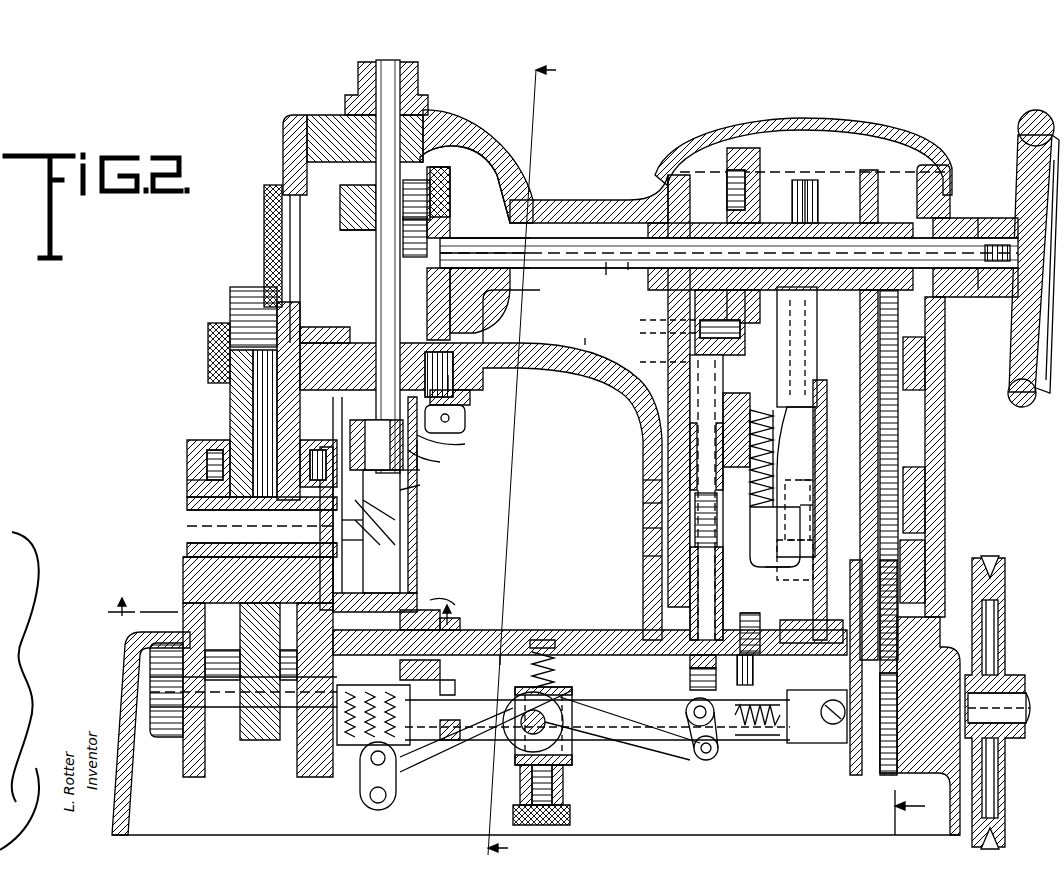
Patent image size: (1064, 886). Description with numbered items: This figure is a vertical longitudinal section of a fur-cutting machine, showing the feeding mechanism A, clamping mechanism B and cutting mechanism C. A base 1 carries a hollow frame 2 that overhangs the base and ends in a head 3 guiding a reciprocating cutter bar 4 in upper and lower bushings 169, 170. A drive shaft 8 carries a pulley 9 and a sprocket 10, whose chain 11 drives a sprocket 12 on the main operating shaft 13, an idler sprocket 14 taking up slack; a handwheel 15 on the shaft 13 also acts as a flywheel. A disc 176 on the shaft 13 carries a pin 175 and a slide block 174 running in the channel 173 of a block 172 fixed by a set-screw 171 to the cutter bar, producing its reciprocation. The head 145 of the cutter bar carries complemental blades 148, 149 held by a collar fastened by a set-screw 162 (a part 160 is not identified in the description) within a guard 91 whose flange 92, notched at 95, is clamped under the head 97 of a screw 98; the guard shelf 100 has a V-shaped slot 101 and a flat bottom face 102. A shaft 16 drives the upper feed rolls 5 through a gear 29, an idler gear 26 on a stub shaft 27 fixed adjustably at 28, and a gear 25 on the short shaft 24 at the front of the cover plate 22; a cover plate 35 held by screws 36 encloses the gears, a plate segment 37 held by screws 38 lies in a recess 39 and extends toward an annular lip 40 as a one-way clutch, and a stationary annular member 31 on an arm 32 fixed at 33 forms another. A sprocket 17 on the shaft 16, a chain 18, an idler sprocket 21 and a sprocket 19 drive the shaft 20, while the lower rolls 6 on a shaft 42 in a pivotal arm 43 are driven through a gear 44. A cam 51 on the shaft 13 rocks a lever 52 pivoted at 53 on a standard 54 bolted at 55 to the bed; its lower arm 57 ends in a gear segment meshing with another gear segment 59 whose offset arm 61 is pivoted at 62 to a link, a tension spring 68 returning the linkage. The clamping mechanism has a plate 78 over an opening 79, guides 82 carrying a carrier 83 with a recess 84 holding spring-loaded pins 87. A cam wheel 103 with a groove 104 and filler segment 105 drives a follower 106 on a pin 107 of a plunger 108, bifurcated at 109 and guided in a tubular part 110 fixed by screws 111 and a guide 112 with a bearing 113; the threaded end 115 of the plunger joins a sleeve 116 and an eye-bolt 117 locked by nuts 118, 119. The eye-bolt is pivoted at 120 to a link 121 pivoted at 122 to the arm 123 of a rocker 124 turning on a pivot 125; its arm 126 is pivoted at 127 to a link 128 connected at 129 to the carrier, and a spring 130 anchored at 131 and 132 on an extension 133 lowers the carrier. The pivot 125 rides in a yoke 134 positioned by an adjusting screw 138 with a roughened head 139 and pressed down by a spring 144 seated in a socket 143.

The base 1 is at (128, 672).
The arm 2 is at (567, 208).
The head 3 is at (338, 116).
The vertical spindle 4 is at (376, 257).
The screw 5 is at (350, 440).
The side plate 6 is at (198, 778).
The pulley shaft 8 is at (1012, 728).
The belt pulley 9 is at (1006, 575).
The bearing post 10 is at (850, 758).
The rod 11 is at (856, 282).
The bar 12 is at (860, 199).
The shaft portion 13 is at (606, 275).
The section line 14 is at (834, 466).
The handwheel / section line 15 is at (1040, 414).
The arm interior 16 is at (585, 340).
The block 17 is at (904, 340).
The ratchet wheel 18 is at (898, 440).
The gear 19 is at (880, 760).
The lower shaft 20 is at (990, 168).
The hub block 21 is at (898, 560).
The head wall 22 is at (284, 137).
The shaft 24 is at (187, 522).
The collar 25 is at (195, 484).
The screw 26 is at (232, 420).
The sleeve 27 is at (230, 397).
The bolt 28 is at (320, 397).
The column 29 is at (230, 392).
The guide 31 is at (640, 320).
The bolt 32 is at (470, 400).
The wall 33 is at (643, 504).
The knob 35 is at (230, 303).
The lever 36 is at (450, 446).
The housing wall 37 is at (187, 502).
The pin 38 is at (813, 485).
The bushing 39 is at (205, 460).
The gear housing 40 is at (195, 456).
The hub 42 is at (183, 678).
The gear 43 is at (258, 745).
The bearing 44 is at (283, 745).
The post 51 is at (793, 196).
The pin 52 is at (810, 185).
The tube 53 is at (790, 340).
The block 54 is at (812, 570).
The bed block 55 is at (812, 618).
The body 57 is at (810, 440).
The pin 59 is at (813, 506).
The foot 61 is at (765, 556).
The spring seat 62 is at (752, 420).
The spring 68 is at (753, 510).
The cover 78 is at (447, 632).
The stud 79 is at (502, 655).
The lever 82 is at (458, 604).
The plate 83 is at (452, 690).
The plate 84 is at (452, 732).
The springs 87 is at (373, 703).
The screw 91 is at (420, 476).
The bolt 92 is at (468, 398).
The wall 95 is at (484, 331).
The bracket 97 is at (467, 418).
The arm wall 98 is at (487, 357).
The bracket 100 is at (400, 570).
The plate 101 is at (400, 545).
The housing 102 is at (420, 598).
The post 103 is at (762, 166).
The bushing 104 is at (727, 190).
The guide 105 is at (640, 333).
The bearing 106 is at (747, 300).
The bearing 107 is at (745, 326).
The rod 108 is at (695, 300).
The flange 109 is at (712, 230).
The foot 110 is at (780, 570).
The pin 111 is at (762, 623).
The guide 112 is at (640, 362).
The shaft portion 113 is at (628, 274).
The wall 115 is at (643, 528).
The wall 116 is at (643, 557).
The screw 117 is at (690, 662).
The wall 118 is at (643, 481).
The screw 119 is at (712, 681).
The nut 120 is at (690, 685).
The rocker 121 is at (700, 762).
The pivot 122 is at (712, 762).
The link 123 is at (638, 750).
The clamp 124 is at (572, 758).
The pivot pin 125 is at (521, 727).
The link 126 is at (437, 785).
The link 127 is at (362, 805).
The pin 128 is at (360, 775).
The link 129 is at (456, 732).
The block 130 is at (800, 745).
The pin 131 is at (773, 607).
The spring 132 is at (768, 740).
The spring 133 is at (750, 735).
The screw 134 is at (563, 778).
The thread 138 is at (553, 798).
The knob 139 is at (570, 815).
The spring 143 is at (560, 660).
The screw head 144 is at (550, 640).
The lever 145 is at (445, 462).
The plate 148 is at (420, 528).
The plate 149 is at (420, 512).
The bar 160 is at (425, 486).
The pin 162 is at (470, 450).
The bracket 169 is at (405, 130).
The housing band 170 is at (338, 343).
The nut 171 is at (342, 200).
The washer 172 is at (355, 228).
The pin 173 is at (415, 226).
The cavity 174 is at (440, 165).
The bolt 175 is at (455, 190).
The hub 176 is at (430, 290).
The shaft A is at (812, 180).
The part B is at (736, 150).
The part C is at (403, 460).